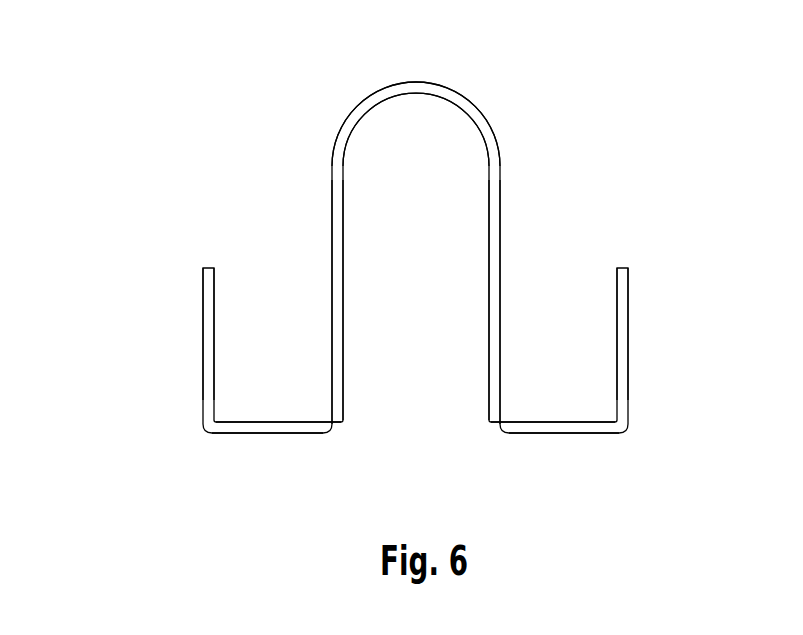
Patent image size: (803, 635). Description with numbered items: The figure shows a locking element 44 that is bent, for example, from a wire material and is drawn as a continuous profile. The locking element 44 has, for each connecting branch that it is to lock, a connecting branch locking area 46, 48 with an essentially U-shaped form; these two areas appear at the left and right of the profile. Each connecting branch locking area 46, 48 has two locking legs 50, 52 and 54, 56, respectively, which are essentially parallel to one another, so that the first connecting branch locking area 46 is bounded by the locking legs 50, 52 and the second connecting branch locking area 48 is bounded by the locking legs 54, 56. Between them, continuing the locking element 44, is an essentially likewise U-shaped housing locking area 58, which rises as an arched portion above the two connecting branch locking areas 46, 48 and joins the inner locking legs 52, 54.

The locking element 44 is at (591, 97).
The connecting branch locking area 46 is at (272, 434).
The connecting branch locking area 48 is at (556, 434).
The locking leg 50 is at (203, 328).
The locking leg 52 is at (332, 267).
The locking leg 54 is at (489, 275).
The locking leg 56 is at (629, 313).
The housing locking area 58 is at (417, 82).